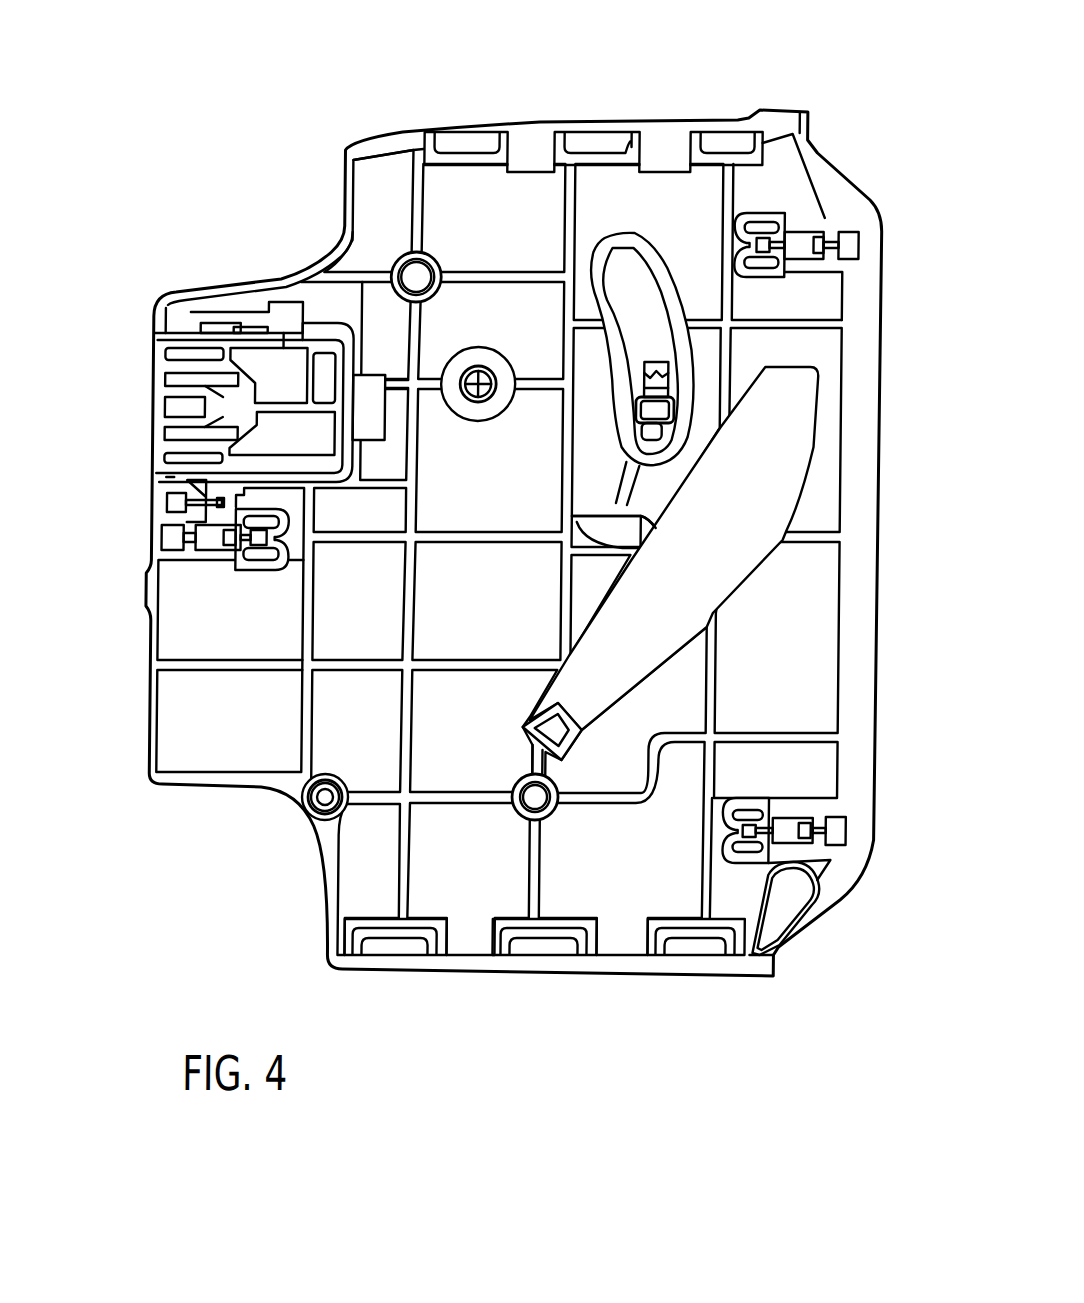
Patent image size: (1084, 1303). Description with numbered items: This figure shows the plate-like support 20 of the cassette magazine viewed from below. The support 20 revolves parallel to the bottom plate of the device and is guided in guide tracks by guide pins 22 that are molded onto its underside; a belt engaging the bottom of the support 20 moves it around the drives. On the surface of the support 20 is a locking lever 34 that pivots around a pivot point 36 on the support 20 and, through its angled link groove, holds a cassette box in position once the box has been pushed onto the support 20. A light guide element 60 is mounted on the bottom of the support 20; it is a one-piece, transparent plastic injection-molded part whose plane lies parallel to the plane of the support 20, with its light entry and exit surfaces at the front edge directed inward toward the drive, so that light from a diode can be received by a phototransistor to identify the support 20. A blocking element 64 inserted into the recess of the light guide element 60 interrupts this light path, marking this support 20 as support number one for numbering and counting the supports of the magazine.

The support 20 is at (788, 670).
The guide pin 22 is at (394, 265).
The locking lever 34 is at (663, 412).
The pivot point 36 is at (479, 366).
The light guide element 60 is at (188, 446).
The blocking element 64 is at (166, 502).